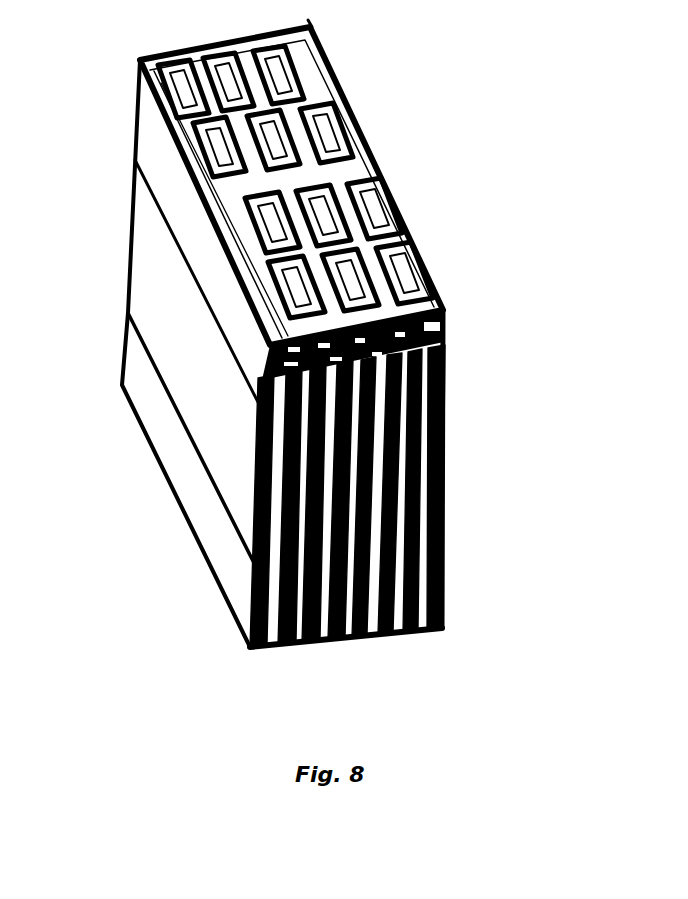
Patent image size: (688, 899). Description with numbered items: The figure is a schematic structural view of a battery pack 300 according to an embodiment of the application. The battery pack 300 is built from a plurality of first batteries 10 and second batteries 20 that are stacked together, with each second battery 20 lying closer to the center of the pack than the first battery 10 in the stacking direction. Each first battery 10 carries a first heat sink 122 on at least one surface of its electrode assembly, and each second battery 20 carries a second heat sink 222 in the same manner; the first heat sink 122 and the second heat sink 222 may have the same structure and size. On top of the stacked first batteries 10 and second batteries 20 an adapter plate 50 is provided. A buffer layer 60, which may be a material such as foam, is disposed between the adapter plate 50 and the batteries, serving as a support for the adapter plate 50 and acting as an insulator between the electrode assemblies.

The battery pack 300 is at (101, 34).
The adapter plate 50 is at (325, 178).
The buffer layer 60 is at (445, 311).
The first battery 10 is at (285, 628).
The second battery 20 is at (373, 623).
The first heat sink 122 is at (268, 578).
The second heat sink 222 is at (395, 590).